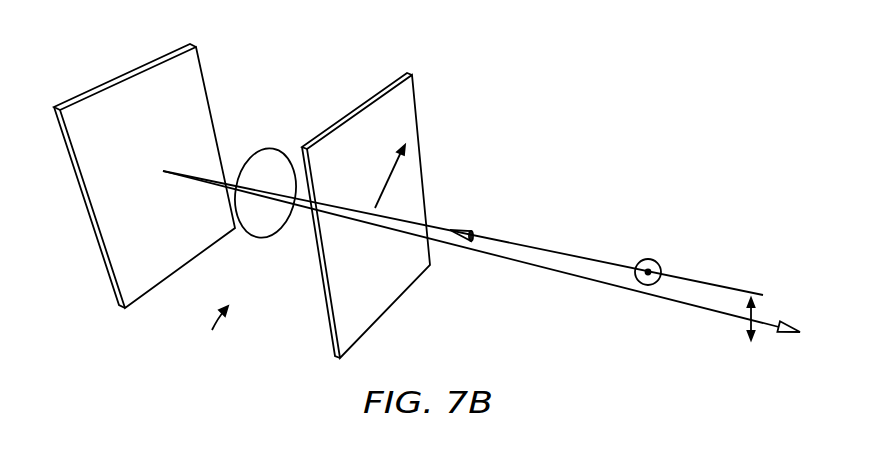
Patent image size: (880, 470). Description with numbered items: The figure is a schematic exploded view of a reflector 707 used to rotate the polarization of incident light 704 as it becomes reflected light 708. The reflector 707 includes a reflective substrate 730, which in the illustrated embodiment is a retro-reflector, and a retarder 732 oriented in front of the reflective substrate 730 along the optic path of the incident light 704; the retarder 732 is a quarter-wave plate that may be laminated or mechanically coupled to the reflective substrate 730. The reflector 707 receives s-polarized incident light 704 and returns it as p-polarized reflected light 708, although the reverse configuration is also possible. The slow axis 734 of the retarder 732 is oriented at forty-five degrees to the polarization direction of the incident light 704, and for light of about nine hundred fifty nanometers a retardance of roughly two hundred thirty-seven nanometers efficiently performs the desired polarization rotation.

The reflective substrate 730 is at (122, 76).
The retarder 732 is at (355, 112).
The slow axis 734 is at (389, 181).
The incident light 704 is at (556, 253).
The reflected light 708 is at (692, 307).
The reflector 707 is at (206, 336).